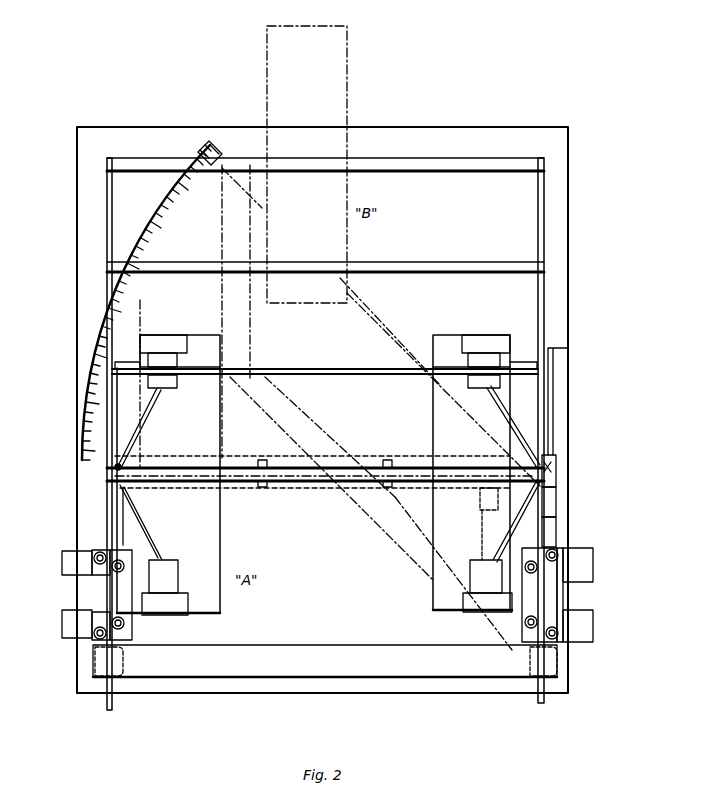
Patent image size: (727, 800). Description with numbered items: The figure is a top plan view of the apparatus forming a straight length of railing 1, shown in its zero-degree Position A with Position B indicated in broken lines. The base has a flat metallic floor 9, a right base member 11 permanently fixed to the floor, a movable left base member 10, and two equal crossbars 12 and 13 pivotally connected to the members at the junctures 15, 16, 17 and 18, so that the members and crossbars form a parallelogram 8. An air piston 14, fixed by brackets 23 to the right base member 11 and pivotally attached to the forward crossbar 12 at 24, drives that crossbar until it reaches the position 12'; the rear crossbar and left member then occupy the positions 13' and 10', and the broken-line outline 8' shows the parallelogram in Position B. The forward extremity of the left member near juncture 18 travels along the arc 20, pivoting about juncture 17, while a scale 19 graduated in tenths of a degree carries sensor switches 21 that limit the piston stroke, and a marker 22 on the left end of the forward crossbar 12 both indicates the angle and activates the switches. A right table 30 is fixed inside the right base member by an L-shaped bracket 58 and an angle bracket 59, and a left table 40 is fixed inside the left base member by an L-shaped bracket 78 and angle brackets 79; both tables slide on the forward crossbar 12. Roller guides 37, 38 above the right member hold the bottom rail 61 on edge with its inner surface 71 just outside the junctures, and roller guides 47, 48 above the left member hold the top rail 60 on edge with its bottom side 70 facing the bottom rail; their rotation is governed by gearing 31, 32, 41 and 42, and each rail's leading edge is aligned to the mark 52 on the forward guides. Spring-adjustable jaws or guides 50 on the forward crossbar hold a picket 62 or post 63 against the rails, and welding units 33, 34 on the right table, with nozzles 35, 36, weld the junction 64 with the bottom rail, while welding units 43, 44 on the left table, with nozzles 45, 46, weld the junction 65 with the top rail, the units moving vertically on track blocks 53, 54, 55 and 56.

The railing 1 is at (401, 145).
The parallelogram 8 is at (324, 706).
The workpiece board in inclined position 8' is at (422, 573).
The floor 9 is at (322, 410).
The left base member 10 is at (70, 498).
The left base member in Position B 10' is at (243, 248).
The right base member 11 is at (556, 500).
The forward crossbar 12 is at (325, 457).
The forward crossbar in Position B 12' is at (381, 327).
The crossbar 13 is at (325, 645).
The crossbar in Position B 13' is at (331, 478).
The air piston 14 is at (484, 516).
The juncture 15 is at (530, 662).
The juncture 16 is at (95, 660).
The juncture 17 is at (558, 466).
The juncture 18 is at (100, 433).
The scale 19 is at (128, 297).
The arc 20 is at (178, 184).
The sensor switches 21 is at (158, 208).
The marker 22 is at (106, 468).
The brackets 23 is at (556, 530).
The pivotal attachment 24 is at (482, 490).
The right table 30 is at (472, 472).
The gearing 31 is at (593, 566).
The gearing 32 is at (593, 628).
The welding unit 33 is at (470, 388).
The welding unit 34 is at (486, 576).
The nozzle 35 is at (513, 418).
The nozzle 36 is at (495, 545).
The roller guide 37 is at (562, 612).
The roller guide 38 is at (565, 615).
The left table 40 is at (168, 474).
The gearing 41 is at (62, 556).
The gearing 42 is at (62, 630).
The welding unit 43 is at (165, 358).
The welding unit 44 is at (163, 576).
The nozzle 45 is at (165, 388).
The nozzle 46 is at (127, 500).
The roller guide 47 is at (102, 560).
The roller guide 48 is at (102, 620).
The jaws or guides 50 is at (260, 460).
The mark 52 is at (110, 552).
The track block 53 is at (487, 335).
The track block 54 is at (462, 606).
The track block 55 is at (170, 335).
The track block 56 is at (180, 598).
The L-shaped bracket 58 is at (556, 352).
The angle bracket 59 is at (500, 612).
The top rail 60 is at (106, 208).
The bottom rail 61 is at (545, 194).
The pickets 62 is at (388, 262).
The posts 63 is at (298, 158).
The junction 64 is at (535, 465).
The junction 65 is at (122, 464).
The bottom side 70 is at (116, 330).
The inner surface 71 is at (530, 318).
The L-shaped bracket 78 is at (92, 345).
The angle brackets 79 is at (135, 550).